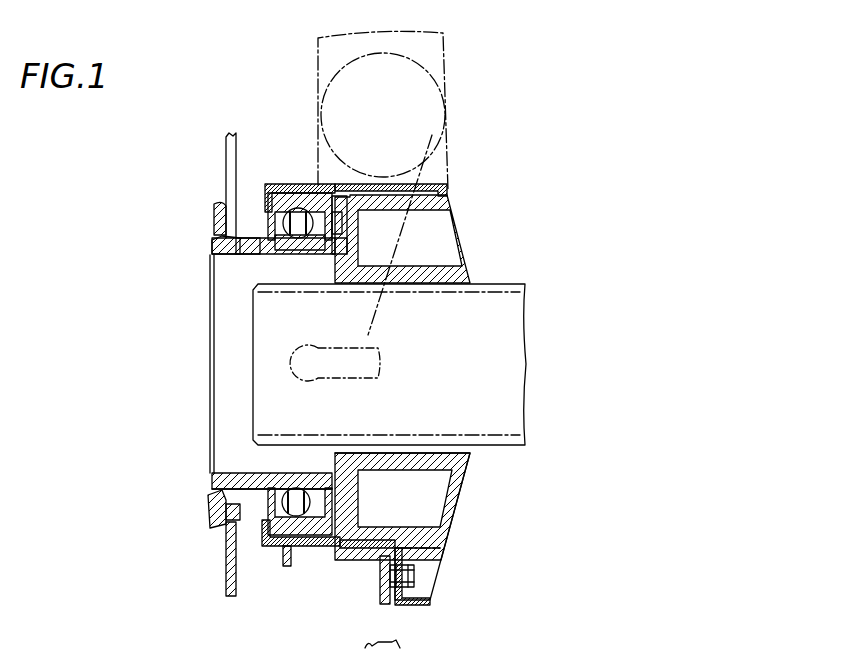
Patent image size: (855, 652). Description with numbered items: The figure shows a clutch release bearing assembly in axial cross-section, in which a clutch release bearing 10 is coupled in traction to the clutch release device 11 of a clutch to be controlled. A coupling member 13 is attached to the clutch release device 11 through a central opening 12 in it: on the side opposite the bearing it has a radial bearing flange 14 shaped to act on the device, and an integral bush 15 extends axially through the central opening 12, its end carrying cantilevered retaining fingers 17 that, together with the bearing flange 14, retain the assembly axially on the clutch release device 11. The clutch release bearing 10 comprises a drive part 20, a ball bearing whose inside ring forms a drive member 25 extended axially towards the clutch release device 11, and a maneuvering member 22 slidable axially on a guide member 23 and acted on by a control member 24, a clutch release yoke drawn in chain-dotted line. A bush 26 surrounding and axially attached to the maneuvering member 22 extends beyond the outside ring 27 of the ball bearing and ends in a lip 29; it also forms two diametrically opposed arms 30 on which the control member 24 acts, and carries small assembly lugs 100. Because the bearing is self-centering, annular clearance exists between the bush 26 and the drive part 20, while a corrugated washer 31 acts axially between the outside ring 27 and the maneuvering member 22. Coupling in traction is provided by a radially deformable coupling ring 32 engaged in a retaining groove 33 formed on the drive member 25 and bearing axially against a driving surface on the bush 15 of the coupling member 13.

The clutch release bearing 10 is at (318, 184).
The clutch release device 11 is at (224, 160).
The central opening 12 is at (222, 233).
The coupling member 13 is at (205, 520).
The bearing flange 14 is at (224, 528).
The bush 15 is at (236, 258).
The retaining fingers 17 is at (232, 560).
The drive part 20 is at (289, 264).
The maneuvering member 22 is at (460, 216).
The guide member 23 is at (505, 287).
The control member 24 is at (445, 92).
The drive member 25 is at (335, 264).
The bush 26 is at (440, 185).
The outside ring 27 is at (340, 224).
The lip 29 is at (285, 187).
The arms 30 is at (412, 606).
The corrugated washer 31 is at (338, 182).
The coupling ring 32 is at (232, 250).
The retaining groove 33 is at (237, 476).
The assembly lugs 100 is at (290, 568).